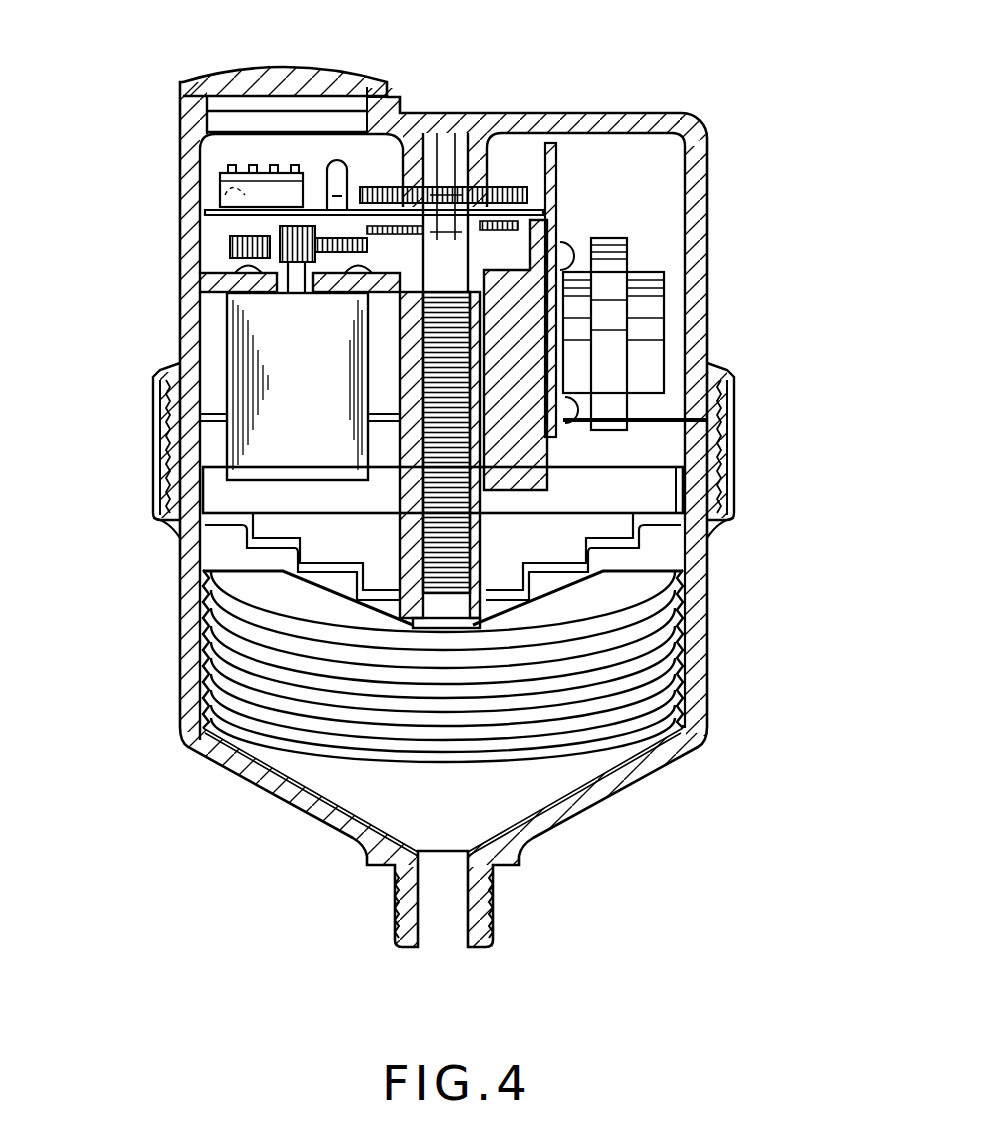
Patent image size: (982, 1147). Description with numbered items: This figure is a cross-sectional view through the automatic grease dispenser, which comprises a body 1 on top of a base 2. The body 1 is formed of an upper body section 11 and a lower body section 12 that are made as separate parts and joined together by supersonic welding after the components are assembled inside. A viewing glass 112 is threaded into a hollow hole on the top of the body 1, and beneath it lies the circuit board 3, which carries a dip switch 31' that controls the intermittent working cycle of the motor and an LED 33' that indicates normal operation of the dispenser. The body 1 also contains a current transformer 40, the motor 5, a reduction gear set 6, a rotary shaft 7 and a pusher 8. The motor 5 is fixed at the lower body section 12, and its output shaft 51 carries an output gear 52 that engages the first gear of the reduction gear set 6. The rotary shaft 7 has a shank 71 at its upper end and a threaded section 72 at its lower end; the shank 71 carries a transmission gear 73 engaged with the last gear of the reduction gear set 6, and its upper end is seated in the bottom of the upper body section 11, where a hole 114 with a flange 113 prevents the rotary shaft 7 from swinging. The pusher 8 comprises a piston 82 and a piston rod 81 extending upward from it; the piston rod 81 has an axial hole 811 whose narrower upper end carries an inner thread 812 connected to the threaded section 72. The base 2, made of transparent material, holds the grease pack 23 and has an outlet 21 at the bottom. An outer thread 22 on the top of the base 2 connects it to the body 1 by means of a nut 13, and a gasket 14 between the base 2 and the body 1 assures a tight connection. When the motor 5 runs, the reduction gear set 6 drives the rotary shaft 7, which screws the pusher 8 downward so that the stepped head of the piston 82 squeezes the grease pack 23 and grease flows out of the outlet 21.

The body 1 is at (640, 112).
The base 2 is at (700, 648).
The circuit board 3 is at (263, 207).
The motor 5 is at (235, 350).
The reduction gear set 6 is at (333, 222).
The rotary shaft 7 is at (478, 245).
The pusher 8 is at (648, 531).
The upper body section 11 is at (690, 133).
The lower body section 12 is at (697, 317).
The nut 13 is at (157, 379).
The gasket 14 is at (160, 433).
The outlet 21 is at (427, 920).
The outer thread 22 is at (155, 518).
The grease pack 23 is at (685, 702).
The dip switch 31' is at (335, 159).
The LED 33' is at (313, 73).
The current transformer 40 is at (601, 240).
The output shaft 51 is at (200, 273).
The output gear 52 is at (273, 240).
The shank 71 is at (445, 133).
The threaded section 72 is at (423, 358).
The transmission gear 73 is at (395, 187).
The piston rod 81 is at (403, 432).
The piston 82 is at (323, 572).
The axial hole 811 is at (470, 540).
The inner thread 812 is at (403, 313).
The viewing glass 112 is at (325, 80).
The flange 113 is at (411, 152).
The hole 114 is at (488, 167).